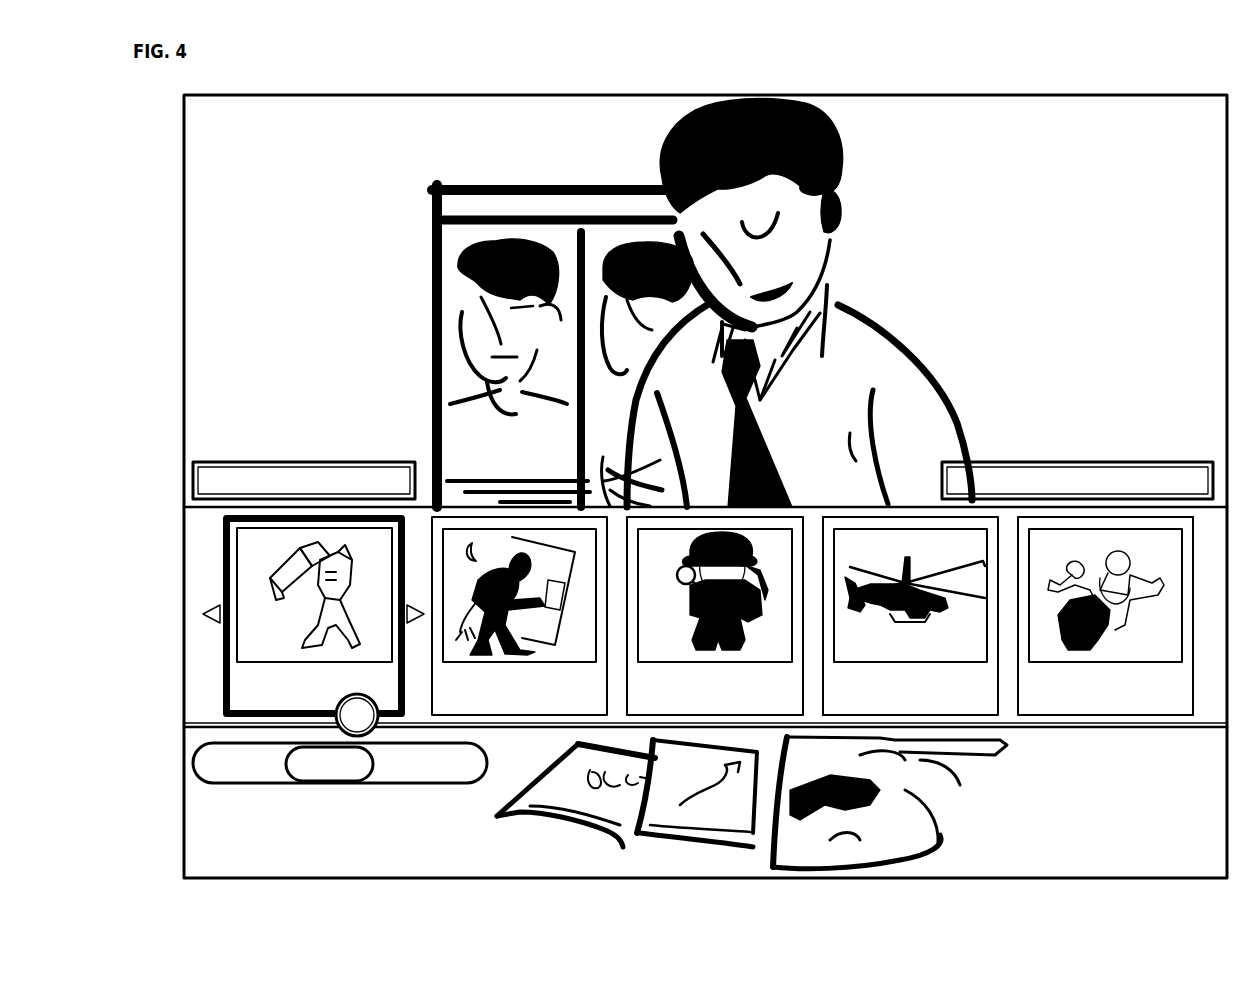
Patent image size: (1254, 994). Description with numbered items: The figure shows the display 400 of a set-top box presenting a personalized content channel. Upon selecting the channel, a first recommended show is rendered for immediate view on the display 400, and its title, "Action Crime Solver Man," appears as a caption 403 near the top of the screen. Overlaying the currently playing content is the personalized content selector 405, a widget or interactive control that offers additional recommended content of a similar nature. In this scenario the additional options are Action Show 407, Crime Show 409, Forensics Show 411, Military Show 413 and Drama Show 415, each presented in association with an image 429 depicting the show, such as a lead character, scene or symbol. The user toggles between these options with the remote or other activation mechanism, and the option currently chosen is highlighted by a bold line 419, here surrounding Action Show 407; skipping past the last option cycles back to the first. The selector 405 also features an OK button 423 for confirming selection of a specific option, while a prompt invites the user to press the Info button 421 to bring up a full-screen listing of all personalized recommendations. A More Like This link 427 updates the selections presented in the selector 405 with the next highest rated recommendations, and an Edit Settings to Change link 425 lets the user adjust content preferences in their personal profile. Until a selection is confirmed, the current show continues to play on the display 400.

The display 400 is at (721, 75).
The caption 403 is at (259, 159).
The personalized content selector 405 is at (1147, 731).
The Action Show 407 is at (303, 707).
The Crime Show 409 is at (508, 707).
The Forensics Show 411 is at (704, 707).
The Military Show 413 is at (899, 707).
The Drama Show 415 is at (1094, 707).
The bold line 419 is at (218, 547).
The Info button 421 is at (332, 785).
The OK button 423 is at (378, 730).
The edit settings to change button 425 is at (1117, 455).
The More Like This link 427 is at (302, 455).
The image 429 is at (988, 586).